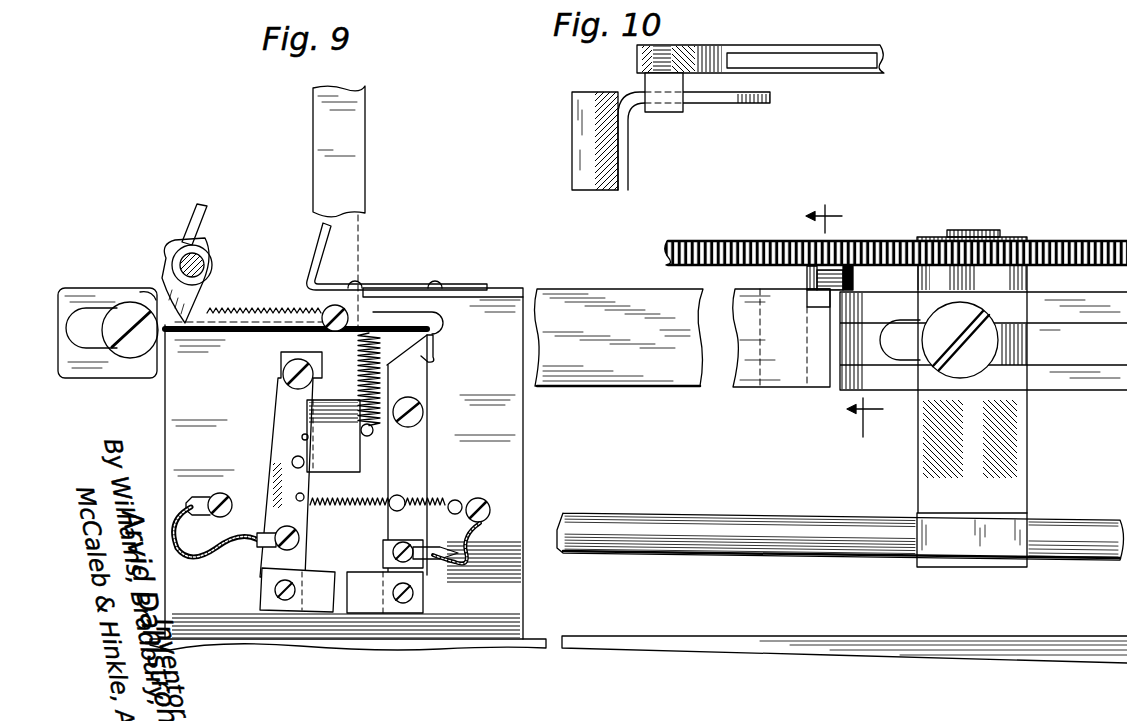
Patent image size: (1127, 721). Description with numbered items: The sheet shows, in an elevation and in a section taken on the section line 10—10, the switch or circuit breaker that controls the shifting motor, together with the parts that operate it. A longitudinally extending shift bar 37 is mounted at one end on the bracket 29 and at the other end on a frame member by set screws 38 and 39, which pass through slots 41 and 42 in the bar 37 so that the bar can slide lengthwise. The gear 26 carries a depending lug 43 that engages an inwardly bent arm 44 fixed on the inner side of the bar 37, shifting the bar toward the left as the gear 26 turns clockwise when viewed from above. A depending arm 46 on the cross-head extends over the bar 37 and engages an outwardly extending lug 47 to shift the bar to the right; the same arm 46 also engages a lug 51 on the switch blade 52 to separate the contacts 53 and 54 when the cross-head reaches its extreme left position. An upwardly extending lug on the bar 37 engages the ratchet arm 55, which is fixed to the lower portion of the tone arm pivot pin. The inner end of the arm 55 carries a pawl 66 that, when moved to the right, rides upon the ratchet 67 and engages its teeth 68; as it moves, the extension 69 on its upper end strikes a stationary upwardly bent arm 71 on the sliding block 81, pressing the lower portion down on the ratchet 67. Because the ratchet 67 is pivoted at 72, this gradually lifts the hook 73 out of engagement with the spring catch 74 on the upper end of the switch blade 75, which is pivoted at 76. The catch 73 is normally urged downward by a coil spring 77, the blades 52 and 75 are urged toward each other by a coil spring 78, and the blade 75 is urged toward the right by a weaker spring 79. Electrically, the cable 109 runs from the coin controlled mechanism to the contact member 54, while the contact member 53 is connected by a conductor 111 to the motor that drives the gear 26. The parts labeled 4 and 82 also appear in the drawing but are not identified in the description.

In FIG. 10, the rod 4 is at (707, 628).
In FIG. 10, the section line 10 is at (859, 321).
In FIG. 10, the gear 26 is at (767, 40).
In FIG. 10, the bracket 29 is at (1003, 478).
In FIG. 10, the shift bar 37 is at (607, 183).
In FIG. 10, the set screw 38 is at (940, 323).
In FIG. 9, the set screw 39 is at (130, 353).
In FIG. 10, the slot 41 is at (1097, 345).
In FIG. 9, the slot 42 is at (82, 345).
In FIG. 10, the depending lug 43 is at (822, 277).
In FIG. 10, the inwardly bent arm 44 is at (750, 107).
In FIG. 9, the depending arm 46 is at (347, 193).
In FIG. 10, the outwardly extending lug 47 is at (823, 370).
In FIG. 9, the lug 51 is at (287, 453).
In FIG. 9, the switch blade 52 is at (280, 477).
In FIG. 9, the contact 53 is at (325, 606).
In FIG. 9, the contact 54 is at (373, 607).
In FIG. 9, the ratchet arm 55 is at (207, 262).
In FIG. 9, the pawl 66 is at (185, 300).
In FIG. 9, the ratchet 67 is at (215, 333).
In FIG. 9, the teeth 68 is at (262, 300).
In FIG. 9, the extension 69 is at (205, 213).
In FIG. 9, the upwardly bent arm 71 is at (335, 240).
In FIG. 9, the pivot 72 is at (340, 315).
In FIG. 9, the hook 73 is at (433, 322).
In FIG. 9, the spring catch 74 is at (431, 352).
In FIG. 9, the switch blade 75 is at (417, 427).
In FIG. 9, the pivot 76 is at (420, 400).
In FIG. 9, the coil spring 77 is at (360, 350).
In FIG. 9, the coil spring 78 is at (363, 492).
In FIG. 9, the spring 79 is at (440, 498).
In FIG. 9, the sliding block 81 is at (486, 298).
In FIG. 9, the lug 82 is at (133, 290).
In FIG. 9, the conductor 109 is at (487, 537).
In FIG. 9, the conductor 111 is at (210, 557).